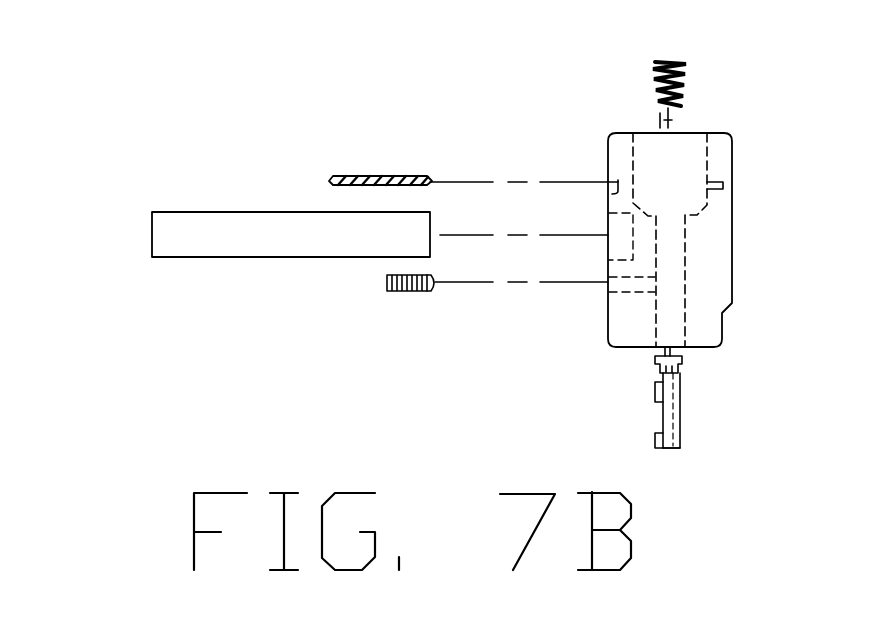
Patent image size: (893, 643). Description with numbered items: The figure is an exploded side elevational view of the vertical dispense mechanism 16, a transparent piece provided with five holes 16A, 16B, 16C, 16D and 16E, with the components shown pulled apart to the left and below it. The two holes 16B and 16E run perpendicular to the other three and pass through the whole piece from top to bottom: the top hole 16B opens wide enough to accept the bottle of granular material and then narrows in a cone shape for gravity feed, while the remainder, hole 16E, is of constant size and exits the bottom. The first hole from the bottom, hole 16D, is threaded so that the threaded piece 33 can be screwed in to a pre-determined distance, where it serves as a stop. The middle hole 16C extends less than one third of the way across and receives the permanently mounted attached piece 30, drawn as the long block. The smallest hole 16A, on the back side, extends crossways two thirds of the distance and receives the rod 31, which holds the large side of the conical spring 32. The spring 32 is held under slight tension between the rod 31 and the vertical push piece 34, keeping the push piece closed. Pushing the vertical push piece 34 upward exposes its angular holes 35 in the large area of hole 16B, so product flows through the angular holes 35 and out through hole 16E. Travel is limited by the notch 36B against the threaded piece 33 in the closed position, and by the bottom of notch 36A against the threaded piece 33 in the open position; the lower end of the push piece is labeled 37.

The vertical dispense mechanism 16 is at (710, 242).
The hole 16A is at (615, 182).
The hole 16B is at (702, 142).
The hole 16C is at (615, 238).
The hole 16D is at (633, 292).
The hole 16E is at (677, 333).
The attached piece 30 is at (152, 258).
The rod 31 is at (333, 181).
The conical spring 32 is at (675, 55).
The threaded piece 33 is at (388, 292).
The vertical push piece 34 is at (680, 427).
The angular holes 35 is at (670, 370).
The notch 36A is at (663, 438).
The notch 36B is at (660, 400).
The pin tip 37 is at (665, 446).